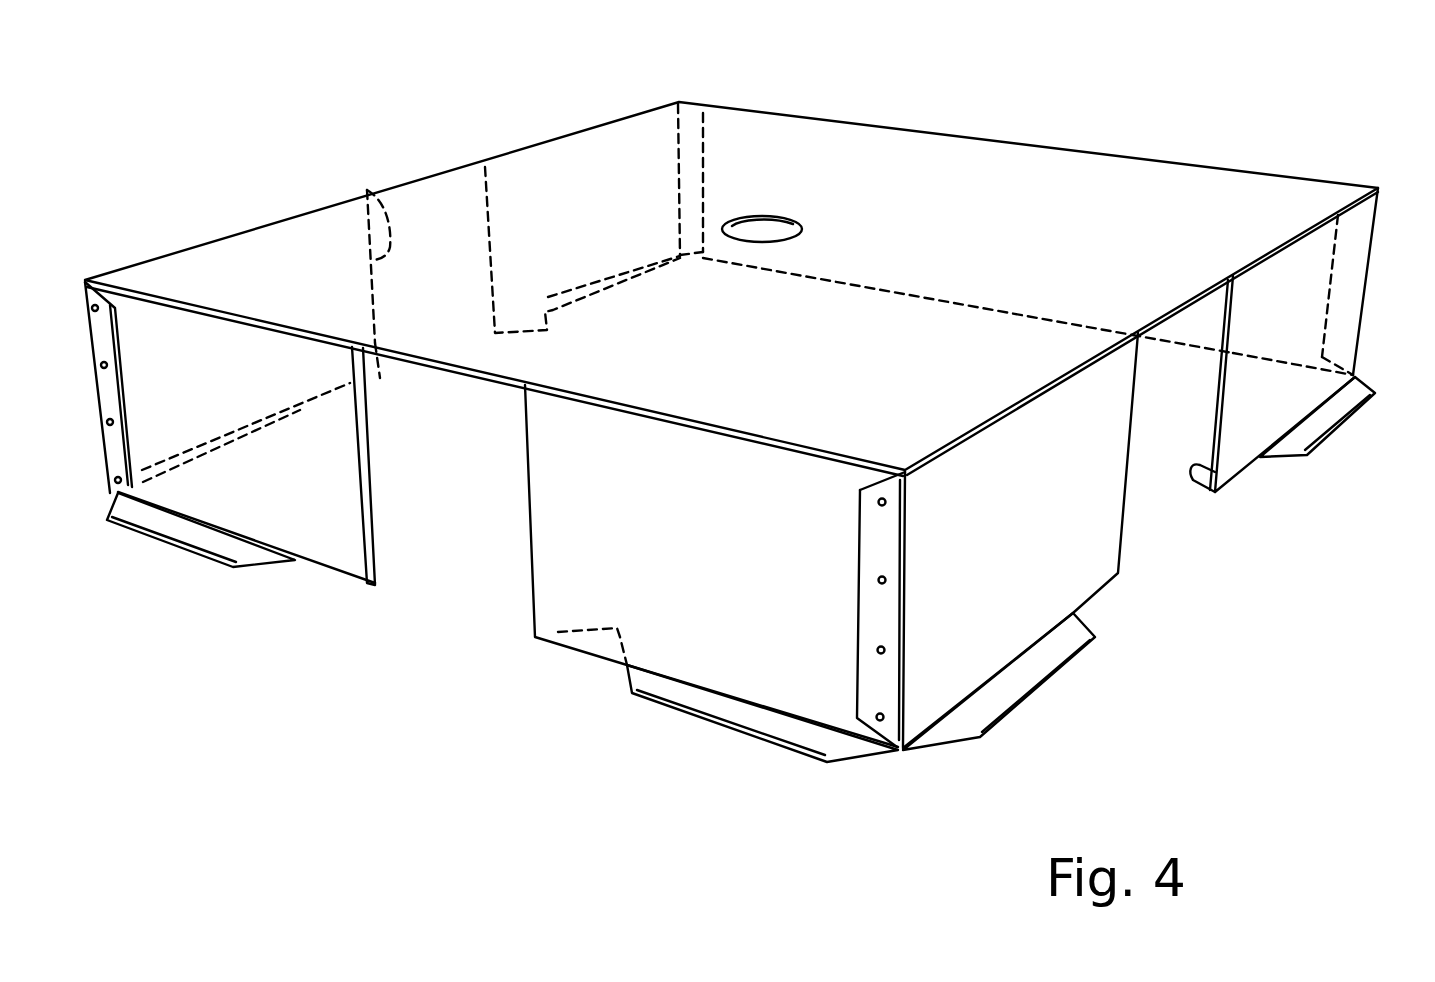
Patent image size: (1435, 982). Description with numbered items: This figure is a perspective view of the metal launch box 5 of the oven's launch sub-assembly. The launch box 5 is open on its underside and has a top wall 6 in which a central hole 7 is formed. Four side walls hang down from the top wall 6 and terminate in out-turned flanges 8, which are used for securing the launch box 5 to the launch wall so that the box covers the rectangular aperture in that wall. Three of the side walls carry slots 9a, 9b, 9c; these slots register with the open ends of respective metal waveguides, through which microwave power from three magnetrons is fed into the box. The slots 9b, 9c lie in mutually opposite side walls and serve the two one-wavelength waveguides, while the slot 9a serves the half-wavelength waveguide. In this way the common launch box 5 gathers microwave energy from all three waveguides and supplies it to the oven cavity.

The launch box 5 is at (752, 431).
The top wall 6 is at (452, 235).
The central hole 7 is at (760, 220).
The out-turned flanges 8 is at (173, 527).
The slot 9a is at (370, 427).
The slot 9b is at (1133, 512).
The slot 9c is at (367, 187).